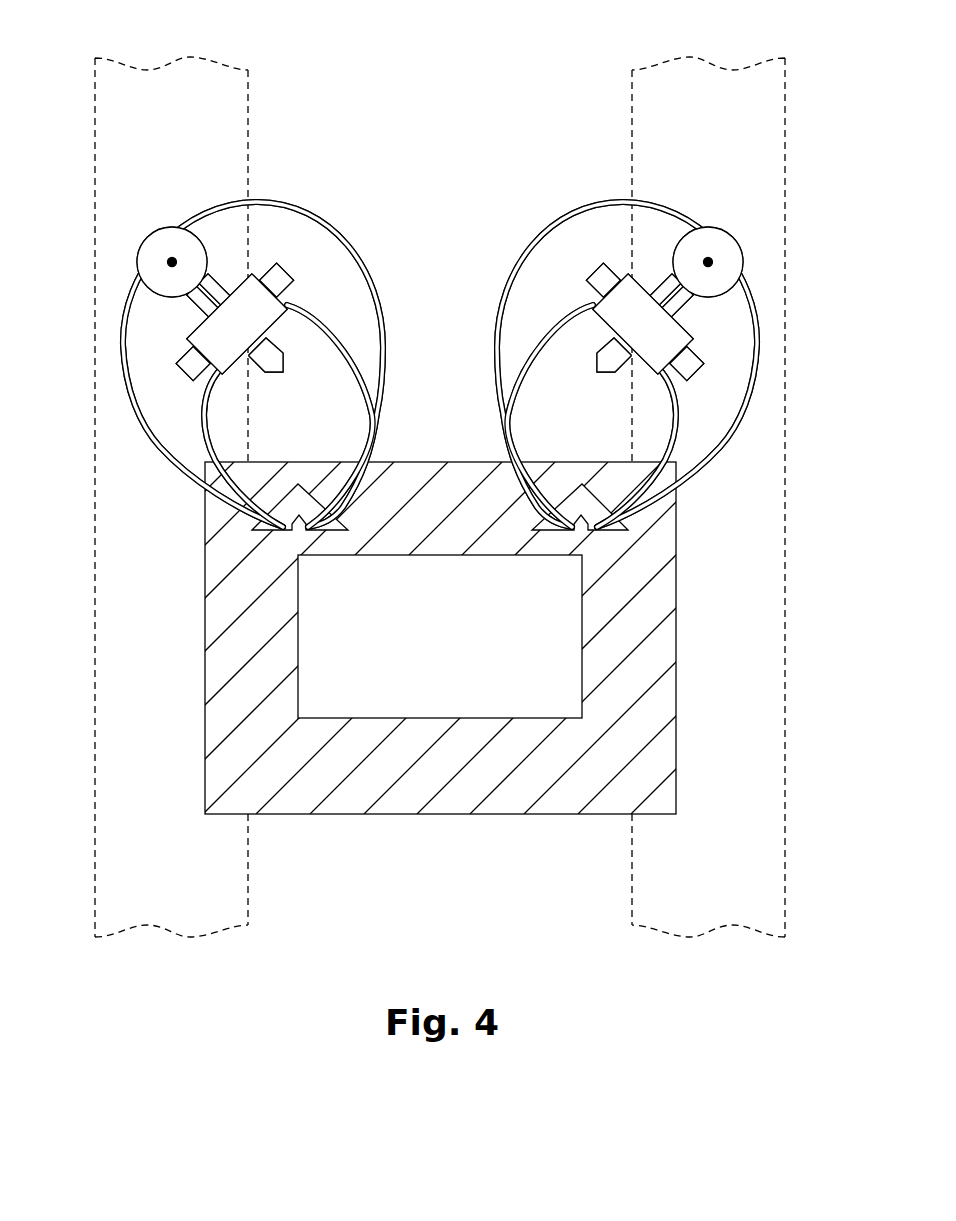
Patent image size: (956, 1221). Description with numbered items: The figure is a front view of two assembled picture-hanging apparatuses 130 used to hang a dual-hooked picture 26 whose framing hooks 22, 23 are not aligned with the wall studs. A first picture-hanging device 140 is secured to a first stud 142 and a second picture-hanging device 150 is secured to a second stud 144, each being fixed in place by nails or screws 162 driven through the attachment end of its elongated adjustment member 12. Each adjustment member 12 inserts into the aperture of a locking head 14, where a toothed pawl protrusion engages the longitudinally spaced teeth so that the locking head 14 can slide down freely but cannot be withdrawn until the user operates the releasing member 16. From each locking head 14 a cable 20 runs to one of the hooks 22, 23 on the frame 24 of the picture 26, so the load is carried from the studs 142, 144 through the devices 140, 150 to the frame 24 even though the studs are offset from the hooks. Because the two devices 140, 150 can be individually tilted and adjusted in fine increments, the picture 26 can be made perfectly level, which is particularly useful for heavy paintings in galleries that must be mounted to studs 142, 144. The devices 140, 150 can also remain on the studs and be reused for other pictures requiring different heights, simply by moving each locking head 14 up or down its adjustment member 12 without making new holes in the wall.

The apparatuses for hanging a dual-hooked picture 130 is at (436, 66).
The first picture-hanging device 140 is at (134, 186).
The second picture-hanging device 150 is at (746, 186).
The first stud 142 is at (248, 127).
The second stud 144 is at (632, 127).
The nails or screws 162 is at (172, 262).
The adjustment member 12 is at (216, 254).
The locking head 14 is at (252, 272).
The releasing member 16 is at (286, 270).
The cable 20 is at (128, 352).
The hook 22 is at (262, 528).
The hook 23 is at (615, 528).
The frame 24 is at (220, 762).
The picture 26 is at (712, 828).